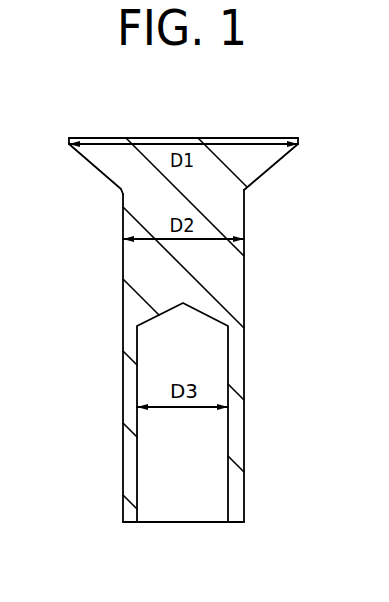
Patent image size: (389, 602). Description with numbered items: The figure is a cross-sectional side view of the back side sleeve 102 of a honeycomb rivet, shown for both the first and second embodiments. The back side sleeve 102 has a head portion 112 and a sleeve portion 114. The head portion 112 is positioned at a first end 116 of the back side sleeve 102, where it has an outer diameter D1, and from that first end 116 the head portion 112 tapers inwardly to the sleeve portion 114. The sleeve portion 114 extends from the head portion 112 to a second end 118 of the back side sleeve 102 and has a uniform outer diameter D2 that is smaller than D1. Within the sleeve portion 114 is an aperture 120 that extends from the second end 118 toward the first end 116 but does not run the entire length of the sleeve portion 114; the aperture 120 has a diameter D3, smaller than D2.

The back side sleeve 102 is at (181, 328).
The head portion 112 is at (183, 128).
The sleeve portion 114 is at (238, 290).
The first end 116 is at (233, 138).
The second end 118 is at (235, 524).
The aperture 120 is at (180, 508).